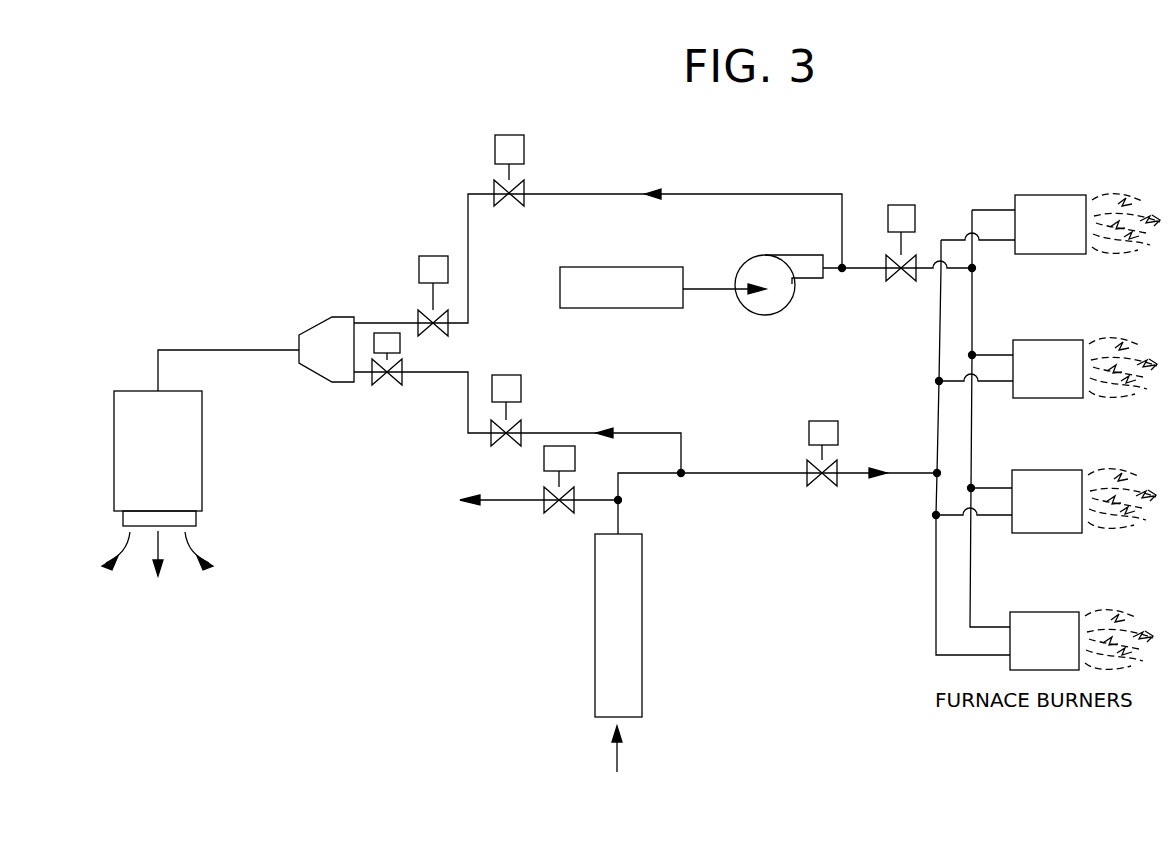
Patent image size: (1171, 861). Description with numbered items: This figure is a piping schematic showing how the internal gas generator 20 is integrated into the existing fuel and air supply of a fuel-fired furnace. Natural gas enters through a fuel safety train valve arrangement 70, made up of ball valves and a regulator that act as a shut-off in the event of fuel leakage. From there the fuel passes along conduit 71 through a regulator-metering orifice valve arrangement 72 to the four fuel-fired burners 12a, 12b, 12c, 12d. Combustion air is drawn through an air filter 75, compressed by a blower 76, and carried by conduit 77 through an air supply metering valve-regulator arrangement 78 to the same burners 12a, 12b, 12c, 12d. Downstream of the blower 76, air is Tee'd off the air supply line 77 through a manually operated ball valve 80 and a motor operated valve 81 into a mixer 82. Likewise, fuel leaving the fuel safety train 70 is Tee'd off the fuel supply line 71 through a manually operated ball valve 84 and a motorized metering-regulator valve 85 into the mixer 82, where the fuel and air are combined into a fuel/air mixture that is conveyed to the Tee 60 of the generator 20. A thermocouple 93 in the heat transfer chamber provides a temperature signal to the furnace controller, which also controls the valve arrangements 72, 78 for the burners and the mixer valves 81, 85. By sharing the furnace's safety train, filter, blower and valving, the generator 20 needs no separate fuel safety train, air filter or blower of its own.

The fuel-fired burner 12a is at (1086, 195).
The fuel-fired burner 12b is at (1083, 340).
The fuel-fired burner 12c is at (1082, 470).
The fuel-fired burner 12d is at (1079, 612).
The gas generator 20 is at (203, 453).
The Tee 60 is at (156, 364).
The fuel safety train valve arrangement 70 is at (643, 586).
The fuel supply conduit 71 is at (783, 475).
The regulator-metering orifice valve arrangement 72 is at (838, 428).
The air filter 75 is at (646, 266).
The blower 76 is at (766, 256).
The air supply conduit 77 is at (868, 270).
The air supply metering valve-regulator arrangement 78 is at (901, 204).
The manually operated ball valve 80 is at (524, 140).
The motor operated valve 81 is at (433, 255).
The mixer 82 is at (300, 366).
The manually operated ball valve 84 is at (521, 386).
The motorized metering-regulator valve 85 is at (376, 384).
The thermocouple 93 is at (548, 508).